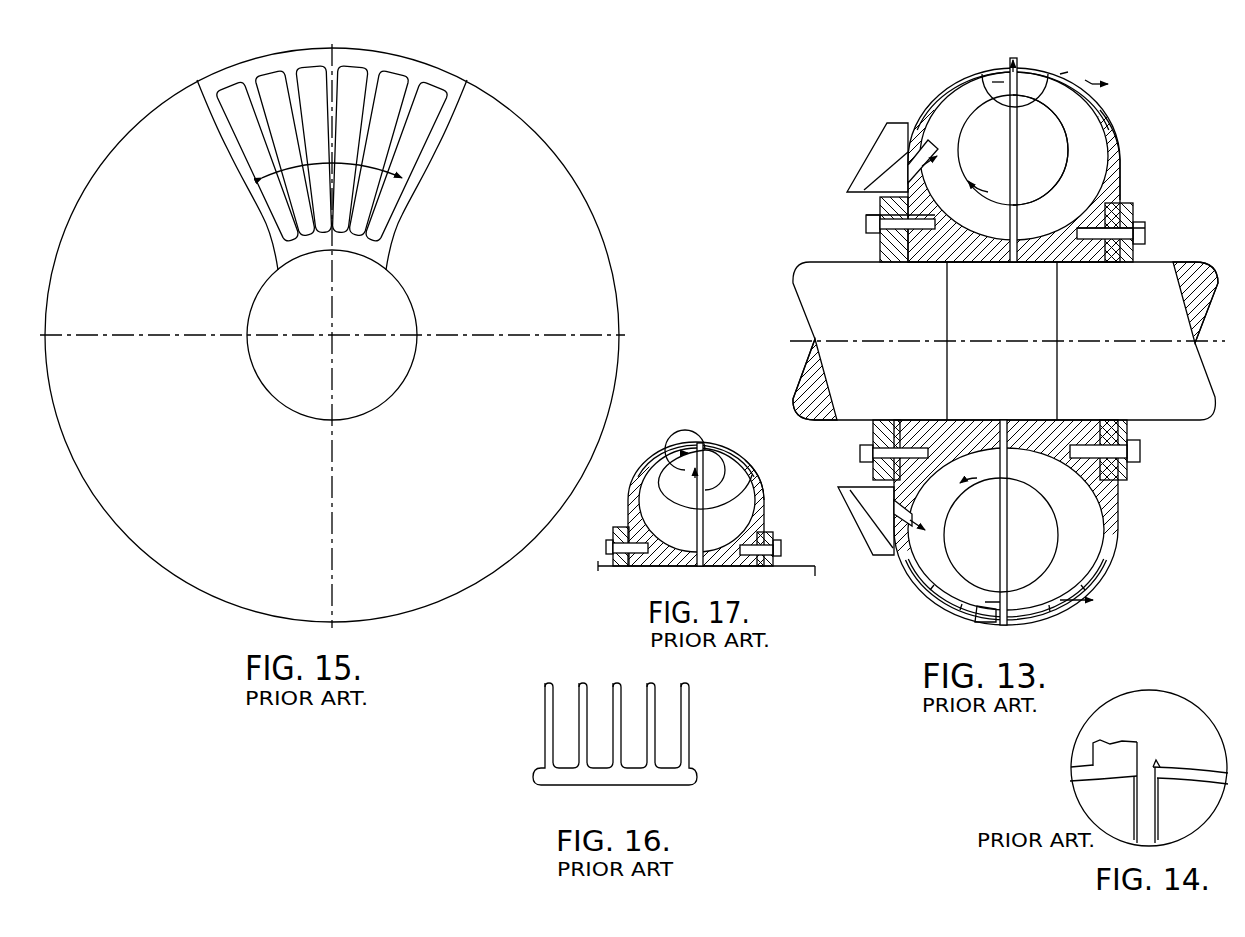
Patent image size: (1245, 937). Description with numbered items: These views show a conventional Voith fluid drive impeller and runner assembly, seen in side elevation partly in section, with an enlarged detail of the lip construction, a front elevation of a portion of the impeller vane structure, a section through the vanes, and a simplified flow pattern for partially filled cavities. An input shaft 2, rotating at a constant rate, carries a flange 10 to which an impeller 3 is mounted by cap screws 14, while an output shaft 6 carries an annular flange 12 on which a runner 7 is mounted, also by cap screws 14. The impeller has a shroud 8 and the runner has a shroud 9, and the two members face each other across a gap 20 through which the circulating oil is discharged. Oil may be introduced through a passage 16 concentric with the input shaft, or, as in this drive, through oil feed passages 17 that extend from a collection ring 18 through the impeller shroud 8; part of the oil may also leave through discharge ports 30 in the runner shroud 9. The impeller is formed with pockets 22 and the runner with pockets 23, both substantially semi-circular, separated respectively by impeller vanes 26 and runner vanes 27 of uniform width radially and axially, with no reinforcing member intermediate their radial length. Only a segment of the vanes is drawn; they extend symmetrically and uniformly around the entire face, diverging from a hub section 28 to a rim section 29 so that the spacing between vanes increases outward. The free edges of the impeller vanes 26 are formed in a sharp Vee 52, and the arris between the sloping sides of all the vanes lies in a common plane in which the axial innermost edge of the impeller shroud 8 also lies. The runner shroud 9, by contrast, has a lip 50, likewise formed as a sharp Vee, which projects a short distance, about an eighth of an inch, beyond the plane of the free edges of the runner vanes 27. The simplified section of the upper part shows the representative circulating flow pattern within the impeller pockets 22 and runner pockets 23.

In FIG. 13, the input shaft 2 is at (818, 260).
In FIG. 13, the impeller 3 is at (914, 104).
In FIG. 17, the impeller 3 is at (630, 482).
In FIG. 13, the output shaft 6 is at (1152, 278).
In FIG. 13, the runner 7 is at (1124, 174).
In FIG. 13, the impeller shroud 8 is at (955, 82).
In FIG. 17, the impeller shroud 8 is at (645, 458).
In FIG. 13, the runner shroud 9 is at (1108, 112).
In FIG. 17, the runner shroud 9 is at (752, 466).
In FIG. 13, the flange 10 is at (880, 205).
In FIG. 17, the flange 10 is at (622, 523).
In FIG. 13, the annular flange 12 is at (1130, 207).
In FIG. 13, the cap screws 14 is at (1146, 231).
In FIG. 17, the cap screws 14 is at (606, 545).
In FIG. 15, the passage 16 is at (264, 175).
In FIG. 13, the oil feed passages 17 is at (929, 154).
In FIG. 13, the collection ring 18 is at (880, 148).
In FIG. 13, the gap 20 is at (1010, 262).
In FIG. 13, the impeller pockets 22 is at (1013, 150).
In FIG. 17, the impeller pockets 22 is at (669, 515).
In FIG. 13, the runner pockets 23 is at (1040, 150).
In FIG. 17, the runner pockets 23 is at (724, 523).
In FIG. 15, the impeller vanes 26 is at (255, 116).
In FIG. 16, the impeller vanes 26 is at (680, 708).
In FIG. 13, the runner vanes 27 is at (1090, 146).
In FIG. 13, the hub section 28 is at (985, 262).
In FIG. 13, the rim section 29 is at (1010, 72).
In FIG. 17, the rim section 29 is at (715, 450).
In FIG. 13, the discharge ports 30 is at (1070, 90).
In FIG. 14, the lip 50 is at (1150, 762).
In FIG. 16, the sharp Vee 52 is at (718, 662).
In FIG. 14, the sharp Vee 52 is at (1134, 808).